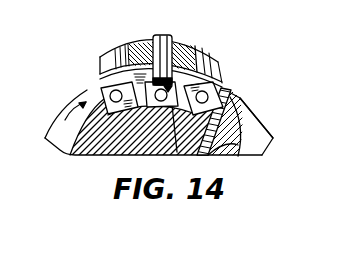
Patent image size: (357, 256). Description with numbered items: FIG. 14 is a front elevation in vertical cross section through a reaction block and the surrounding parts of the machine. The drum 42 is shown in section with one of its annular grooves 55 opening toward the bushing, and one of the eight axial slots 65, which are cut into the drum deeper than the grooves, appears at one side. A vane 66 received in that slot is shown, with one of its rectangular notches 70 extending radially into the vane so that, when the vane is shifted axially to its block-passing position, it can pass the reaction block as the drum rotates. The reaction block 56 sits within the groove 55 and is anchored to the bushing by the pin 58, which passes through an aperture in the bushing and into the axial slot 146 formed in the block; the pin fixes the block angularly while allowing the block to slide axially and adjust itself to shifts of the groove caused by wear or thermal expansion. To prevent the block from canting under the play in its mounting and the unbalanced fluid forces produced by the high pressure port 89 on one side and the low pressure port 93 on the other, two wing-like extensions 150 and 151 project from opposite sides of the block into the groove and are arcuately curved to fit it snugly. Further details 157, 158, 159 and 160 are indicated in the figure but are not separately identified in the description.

The drum 42 is at (97, 143).
The groove 55 is at (57, 139).
The pin 58 is at (154, 41).
The reaction block 56 is at (190, 53).
The high pressure port 89 is at (110, 55).
The low pressure port 93 is at (208, 62).
The wing-like projection 150 is at (222, 80).
The liner band 157 is at (222, 87).
The wing-like projection 151 is at (103, 87).
The left roller block 158 is at (100, 88).
The spring 159 is at (140, 83).
The lamination 160 is at (103, 62).
The vane 66 is at (230, 100).
The notch 70 is at (241, 103).
The axial slot 146 is at (175, 150).
The axial slot 65 is at (219, 145).